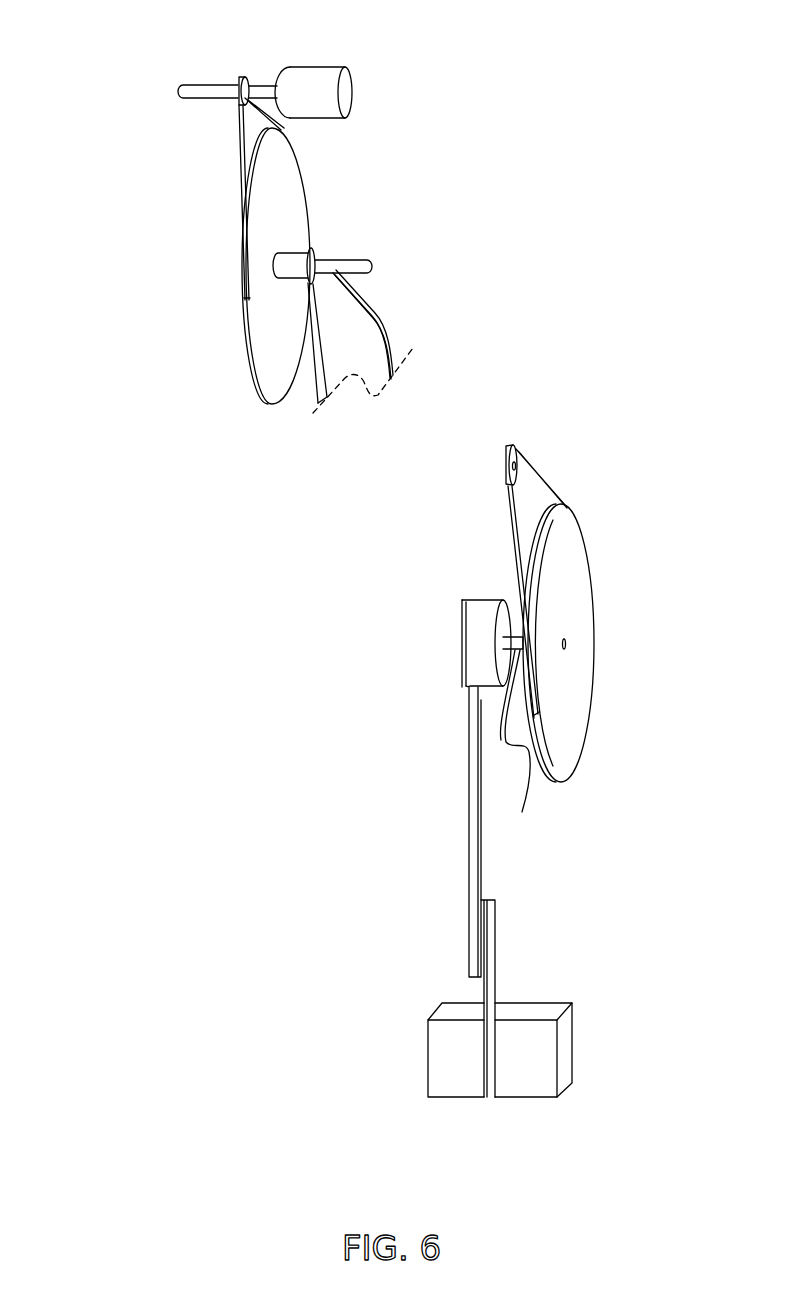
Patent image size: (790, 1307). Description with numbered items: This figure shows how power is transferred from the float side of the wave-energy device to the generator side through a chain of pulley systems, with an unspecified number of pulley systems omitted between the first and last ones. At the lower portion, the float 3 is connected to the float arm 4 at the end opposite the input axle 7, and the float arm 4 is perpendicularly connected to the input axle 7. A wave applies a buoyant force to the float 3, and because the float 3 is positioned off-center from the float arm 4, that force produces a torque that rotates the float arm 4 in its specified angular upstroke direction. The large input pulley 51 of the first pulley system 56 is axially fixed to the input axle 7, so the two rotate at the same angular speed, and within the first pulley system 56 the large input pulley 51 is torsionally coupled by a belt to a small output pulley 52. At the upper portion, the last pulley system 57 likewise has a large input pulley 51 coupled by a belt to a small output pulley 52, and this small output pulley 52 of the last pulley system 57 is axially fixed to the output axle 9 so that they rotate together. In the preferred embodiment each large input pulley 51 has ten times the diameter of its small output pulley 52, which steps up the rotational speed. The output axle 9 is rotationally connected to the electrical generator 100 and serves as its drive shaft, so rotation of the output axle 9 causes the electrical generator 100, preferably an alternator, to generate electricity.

The float 3 is at (568, 1068).
The float arm 4 is at (482, 892).
The input axle 7 is at (515, 749).
The output axle 9 is at (260, 88).
The large input pulley 51 is at (297, 227).
The small output pulley 52 is at (239, 78).
The first pulley system 56 is at (584, 495).
The last pulley system 57 is at (218, 348).
The electrical generator 100 is at (330, 82).